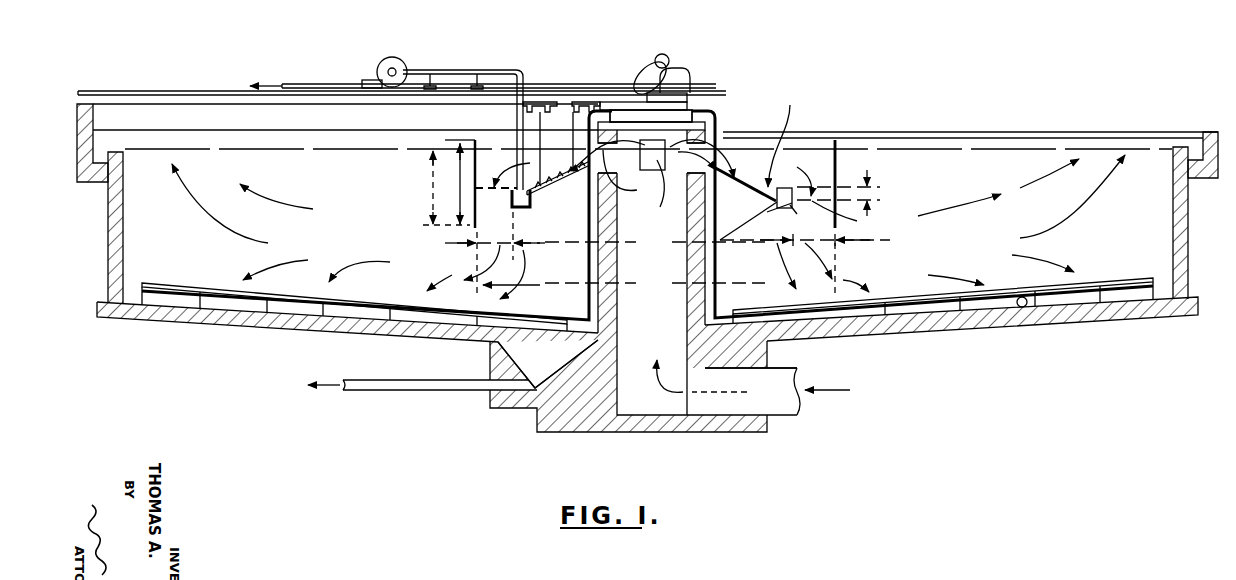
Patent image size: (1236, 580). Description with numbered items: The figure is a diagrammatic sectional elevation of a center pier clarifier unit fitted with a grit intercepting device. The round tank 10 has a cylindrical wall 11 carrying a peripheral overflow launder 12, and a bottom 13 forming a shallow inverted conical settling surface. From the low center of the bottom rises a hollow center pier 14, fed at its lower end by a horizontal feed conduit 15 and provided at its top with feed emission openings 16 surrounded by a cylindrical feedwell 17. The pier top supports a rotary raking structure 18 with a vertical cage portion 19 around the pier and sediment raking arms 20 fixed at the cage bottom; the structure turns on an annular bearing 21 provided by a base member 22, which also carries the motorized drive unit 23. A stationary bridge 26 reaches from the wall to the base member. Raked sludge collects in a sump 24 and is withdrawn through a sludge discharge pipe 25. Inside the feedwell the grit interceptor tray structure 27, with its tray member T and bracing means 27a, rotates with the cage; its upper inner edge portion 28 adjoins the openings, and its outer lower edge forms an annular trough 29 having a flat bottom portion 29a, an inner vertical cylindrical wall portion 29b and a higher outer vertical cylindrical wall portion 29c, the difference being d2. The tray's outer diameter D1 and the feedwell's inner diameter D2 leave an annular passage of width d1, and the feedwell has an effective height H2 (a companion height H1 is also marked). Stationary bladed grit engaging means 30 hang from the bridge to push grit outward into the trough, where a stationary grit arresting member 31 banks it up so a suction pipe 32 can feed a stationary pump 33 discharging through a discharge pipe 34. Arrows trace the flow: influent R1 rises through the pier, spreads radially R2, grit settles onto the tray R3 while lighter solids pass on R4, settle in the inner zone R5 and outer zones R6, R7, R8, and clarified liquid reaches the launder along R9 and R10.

The round tank 10 is at (1040, 129).
The cylindrical wall 11 is at (109, 236).
The peripheral overflow launder 12 is at (101, 162).
The bottom 13 is at (1027, 306).
The hollow center pier 14 is at (690, 255).
The horizontal feed conduit 15 is at (780, 375).
The feed emission openings 16 is at (663, 207).
The feedwell 17 is at (838, 138).
The rotary raking structure 18 is at (728, 308).
The vertical cage portion 19 is at (580, 270).
The sediment raking arms 20 is at (1094, 278).
The annular bearing 21 is at (690, 107).
The base member 22 is at (712, 118).
The motorized drive unit 23 is at (655, 64).
The sump 24 is at (537, 343).
The sludge discharge pipe 25 is at (445, 388).
The stationary bridge 26 is at (552, 102).
The grit interceptor tray structure 27 is at (777, 187).
The bracing means 27a is at (748, 230).
The upper inner edge portion 28 is at (733, 177).
The annular trough 29 is at (836, 186).
The flat bottom portion 29a is at (811, 217).
The inner vertical cylindrical wall portion 29b is at (758, 211).
The outer vertical cylindrical wall portion 29c is at (851, 219).
The stationary bladed grit engaging means 30 is at (542, 127).
The stationary grit arresting member 31 is at (522, 207).
The suction pipe 32 is at (522, 80).
The stationary pump 33 is at (400, 60).
The discharge pipe 34 is at (320, 82).
The tray member T is at (784, 135).
The feed influent flow arrows R1 is at (790, 398).
The radial spreading flow arrows R2 is at (651, 173).
The grit settling arrows R3 is at (563, 206).
The non-gritty carry-over flow arrows R4 is at (504, 167).
The inner zone settling arrows R5 is at (529, 274).
The outer zone settling arrows R6 is at (456, 268).
The outer zone settling arrows R7 is at (356, 269).
The outer zone settling arrows R8 is at (270, 264).
The clarified liquid flow lines R9 is at (203, 214).
The clarified liquid flow lines R10 is at (285, 202).
The height dimension 1 H1 is at (446, 182).
The effective height of feedwell H2 is at (453, 184).
The outer diameter of tray structure D1 is at (655, 243).
The inner diameter of feedwell D2 is at (624, 284).
The annular passage width d1 is at (667, 252).
The wall height differential d2 is at (851, 193).